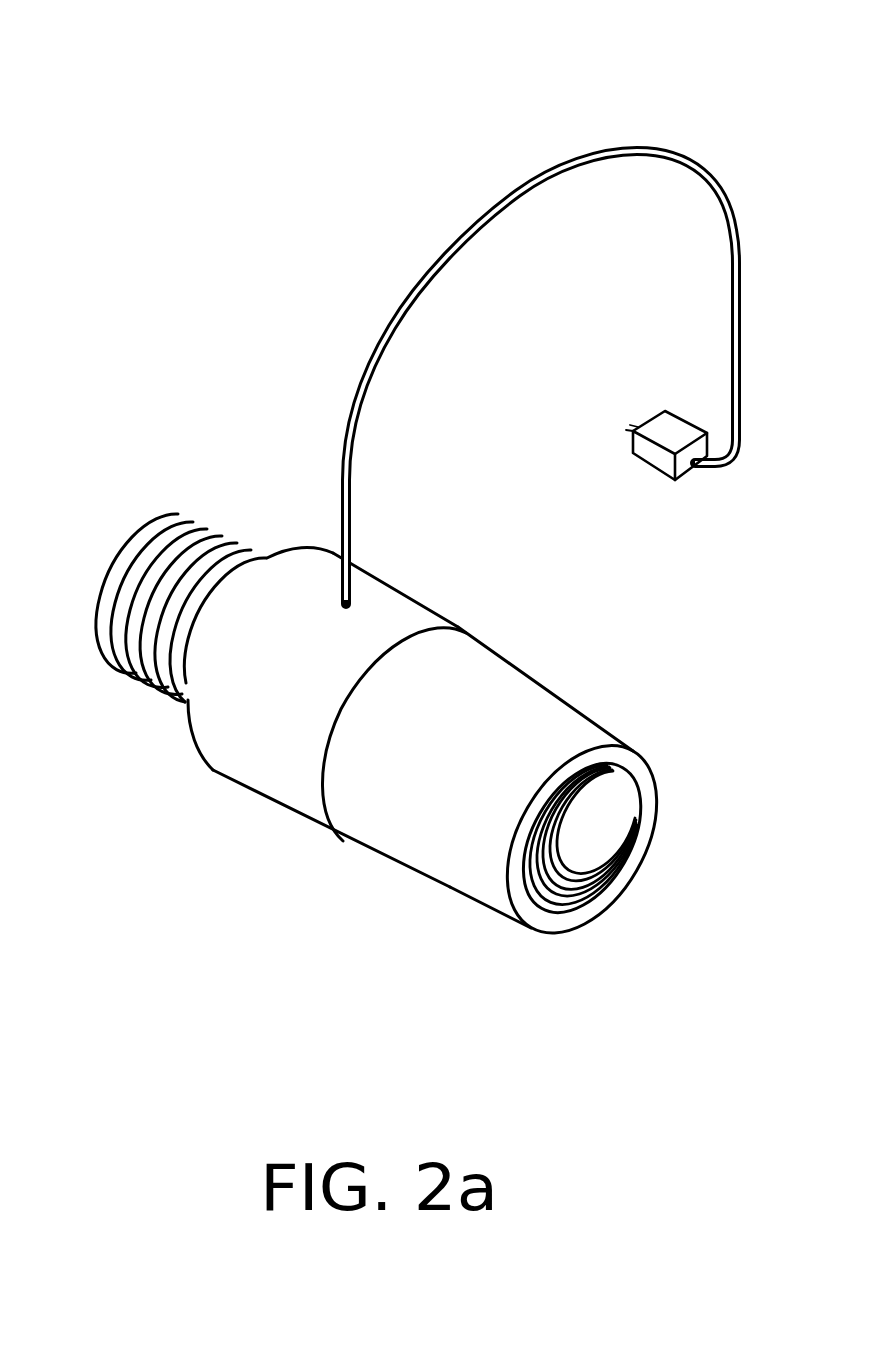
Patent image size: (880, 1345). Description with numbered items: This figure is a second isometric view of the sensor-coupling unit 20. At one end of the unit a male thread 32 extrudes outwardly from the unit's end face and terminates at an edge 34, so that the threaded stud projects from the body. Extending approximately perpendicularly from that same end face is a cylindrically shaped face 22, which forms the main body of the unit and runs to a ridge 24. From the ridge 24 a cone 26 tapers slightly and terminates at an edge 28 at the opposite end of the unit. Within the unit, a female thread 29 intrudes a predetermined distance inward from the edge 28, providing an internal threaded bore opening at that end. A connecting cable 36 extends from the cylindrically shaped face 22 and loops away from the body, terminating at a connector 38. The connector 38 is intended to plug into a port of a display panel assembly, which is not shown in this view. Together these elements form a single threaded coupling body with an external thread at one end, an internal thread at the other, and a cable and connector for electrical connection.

The sensor-coupling unit 20 is at (120, 153).
The cylindrically shaped face 22 is at (255, 732).
The ridge 24 is at (330, 747).
The cone 26 is at (539, 722).
The edge 28 is at (541, 917).
The female thread 29 is at (613, 818).
The male thread 32 is at (131, 678).
The edge 34 is at (125, 545).
The connecting cable 36 is at (392, 327).
The connector 38 is at (649, 453).